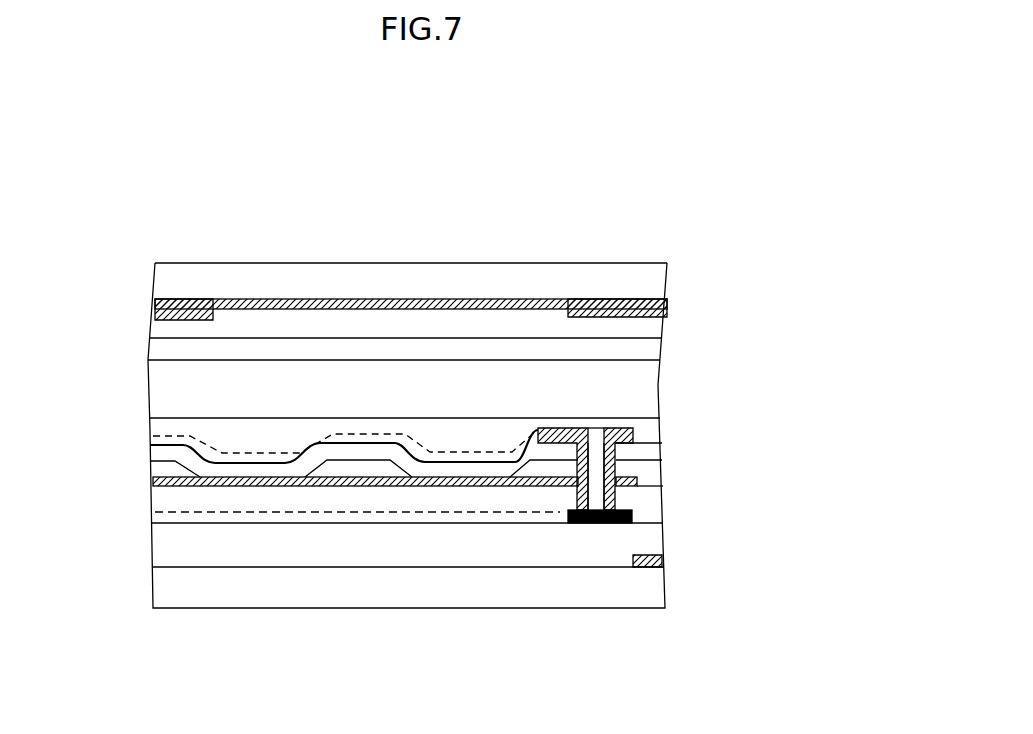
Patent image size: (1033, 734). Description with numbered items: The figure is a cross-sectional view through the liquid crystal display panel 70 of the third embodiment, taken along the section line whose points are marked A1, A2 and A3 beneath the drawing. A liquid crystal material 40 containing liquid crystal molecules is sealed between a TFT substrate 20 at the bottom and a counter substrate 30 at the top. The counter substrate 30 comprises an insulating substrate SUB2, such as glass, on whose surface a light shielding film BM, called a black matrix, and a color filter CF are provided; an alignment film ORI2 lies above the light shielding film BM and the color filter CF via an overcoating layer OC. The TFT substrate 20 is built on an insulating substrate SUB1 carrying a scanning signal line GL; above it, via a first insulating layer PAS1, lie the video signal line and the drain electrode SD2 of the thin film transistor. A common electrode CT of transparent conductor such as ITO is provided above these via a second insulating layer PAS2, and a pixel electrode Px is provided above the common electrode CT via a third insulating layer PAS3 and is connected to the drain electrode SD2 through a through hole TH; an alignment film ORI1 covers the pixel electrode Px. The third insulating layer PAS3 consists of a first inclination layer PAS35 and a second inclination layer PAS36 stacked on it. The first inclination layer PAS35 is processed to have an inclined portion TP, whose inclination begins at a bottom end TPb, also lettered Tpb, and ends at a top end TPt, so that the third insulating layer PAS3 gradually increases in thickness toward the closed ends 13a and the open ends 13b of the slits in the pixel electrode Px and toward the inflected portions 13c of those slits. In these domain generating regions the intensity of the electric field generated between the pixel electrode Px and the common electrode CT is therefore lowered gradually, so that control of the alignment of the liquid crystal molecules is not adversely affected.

The liquid crystal display panel 70 is at (440, 121).
The counter substrate 30 is at (140, 263).
The liquid crystal material 40 is at (140, 361).
The TFT substrate 20 is at (140, 428).
The insulating substrate SUB2 is at (340, 268).
The insulating substrate SUB1 is at (397, 598).
The color filter CF is at (453, 305).
The light shielding film BM is at (183, 303).
The overcoating layer OC is at (598, 330).
The alignment film ORI2 is at (603, 348).
The alignment film ORI1 is at (602, 424).
The pixel electrode Px is at (317, 435).
The second inclination layer PAS36 is at (630, 452).
The first inclination layer PAS35 is at (645, 468).
The third insulating layer PAS3 is at (760, 433).
The closed end 13a is at (543, 428).
The open end 13b is at (157, 438).
The inflected portion 13c is at (360, 452).
The through hole TH is at (586, 490).
The drain electrode SD2 is at (635, 517).
The second insulating layer PAS2 is at (635, 500).
The first insulating layer PAS1 is at (590, 533).
The common electrode CT is at (323, 488).
The scanning signal line GL is at (657, 567).
The top end TPt is at (182, 460).
The inclined portion TP is at (305, 467).
The bottom end TPb is at (278, 468).
The bottom end Tpb is at (420, 473).
The region A1 is at (153, 625).
The region A2 is at (376, 625).
The region A3 is at (666, 625).